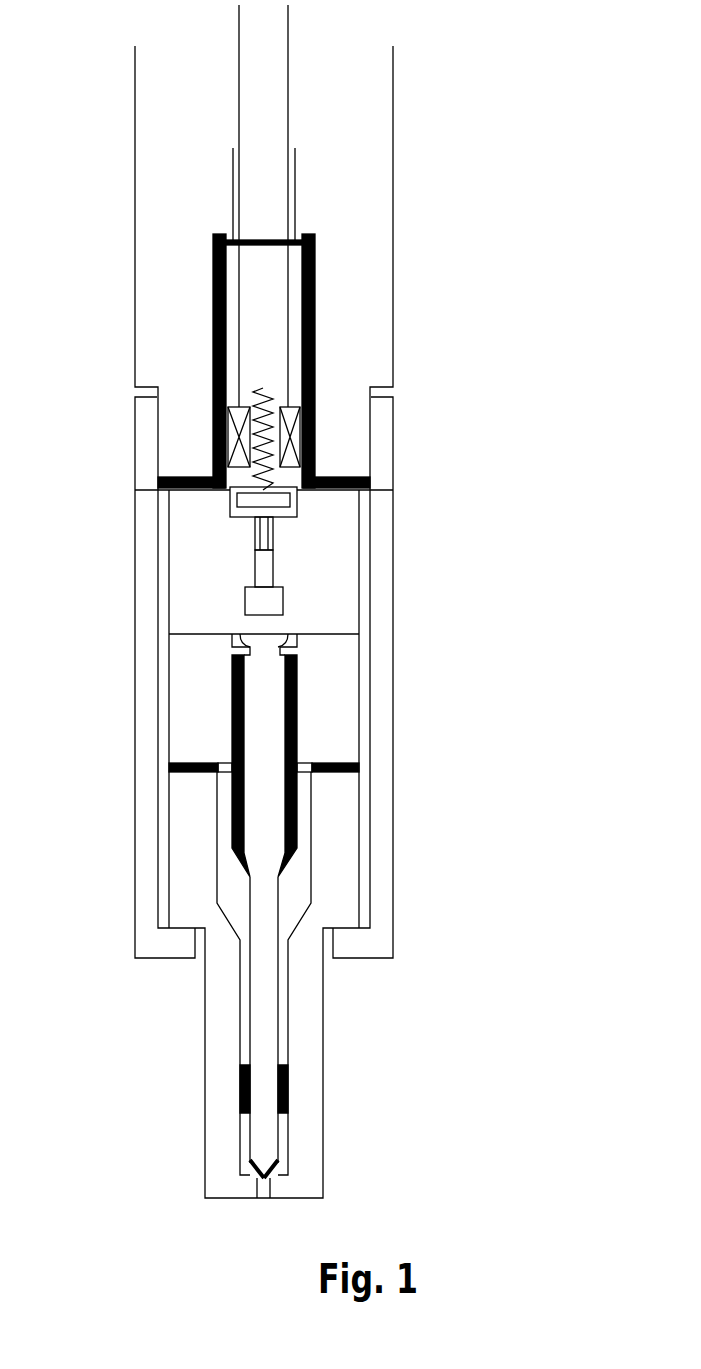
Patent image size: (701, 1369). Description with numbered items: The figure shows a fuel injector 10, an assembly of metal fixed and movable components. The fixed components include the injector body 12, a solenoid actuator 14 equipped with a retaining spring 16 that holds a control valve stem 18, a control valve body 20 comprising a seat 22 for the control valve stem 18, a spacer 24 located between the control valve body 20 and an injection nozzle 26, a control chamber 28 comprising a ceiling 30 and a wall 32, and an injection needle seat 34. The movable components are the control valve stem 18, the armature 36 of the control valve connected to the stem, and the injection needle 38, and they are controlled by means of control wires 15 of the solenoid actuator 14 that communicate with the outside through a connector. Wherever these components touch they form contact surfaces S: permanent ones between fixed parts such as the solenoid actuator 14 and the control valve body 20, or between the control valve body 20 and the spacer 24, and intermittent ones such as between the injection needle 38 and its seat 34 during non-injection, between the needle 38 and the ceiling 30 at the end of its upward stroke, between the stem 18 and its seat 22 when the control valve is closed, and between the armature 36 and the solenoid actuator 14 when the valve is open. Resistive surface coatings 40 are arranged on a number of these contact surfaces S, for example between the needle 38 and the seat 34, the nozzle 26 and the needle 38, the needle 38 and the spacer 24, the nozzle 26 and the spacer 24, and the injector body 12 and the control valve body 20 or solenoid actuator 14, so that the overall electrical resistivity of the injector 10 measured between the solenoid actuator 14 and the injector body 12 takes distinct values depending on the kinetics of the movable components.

The fuel injector 10 is at (452, 90).
The injector body 12 is at (365, 187).
The solenoid actuator 14 is at (270, 335).
The control wires 15 is at (238, 78).
The retaining spring 16 is at (263, 388).
The control valve stem 18 is at (257, 540).
The control valve body 20 is at (333, 538).
The seat for the control valve stem 22 is at (277, 517).
The spacer 24 is at (188, 697).
The injection nozzle 26 is at (330, 843).
The control chamber 28 is at (288, 642).
The ceiling of the control chamber 30 is at (232, 646).
The wall of the control chamber 32 is at (297, 648).
The injection needle seat 34 is at (268, 1174).
The armature 36 is at (232, 500).
The injection needle 38 is at (263, 1000).
The resistive surface coatings 40 is at (213, 256).
The contact surfaces S is at (212, 310).